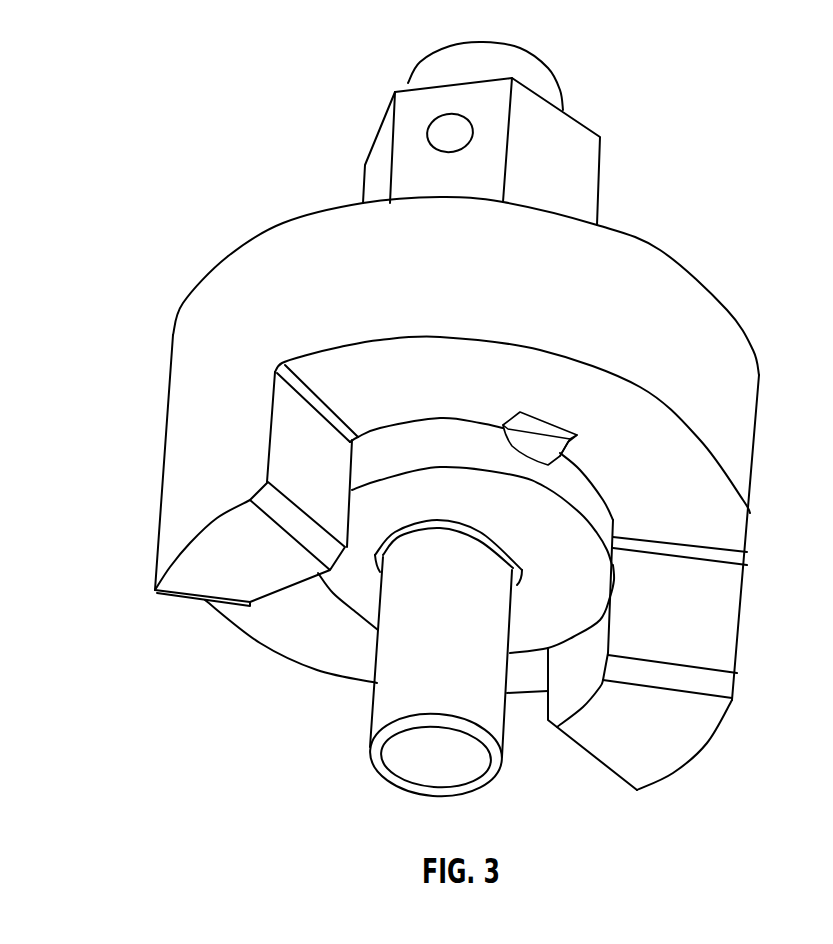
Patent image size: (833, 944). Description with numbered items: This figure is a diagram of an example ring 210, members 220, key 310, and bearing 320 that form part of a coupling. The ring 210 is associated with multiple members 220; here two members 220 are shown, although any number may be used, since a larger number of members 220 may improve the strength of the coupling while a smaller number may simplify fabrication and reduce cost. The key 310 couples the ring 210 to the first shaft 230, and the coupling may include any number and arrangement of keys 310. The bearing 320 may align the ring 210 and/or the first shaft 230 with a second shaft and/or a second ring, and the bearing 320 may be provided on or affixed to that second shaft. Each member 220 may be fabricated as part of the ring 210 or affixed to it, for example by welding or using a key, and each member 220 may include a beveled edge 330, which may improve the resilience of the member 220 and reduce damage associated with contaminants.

The ring 210 is at (660, 250).
The member 220 is at (167, 462).
The first shaft 230 is at (565, 102).
The key 310 is at (547, 422).
The bearing 320 is at (493, 763).
The beveled edge 330 is at (713, 692).